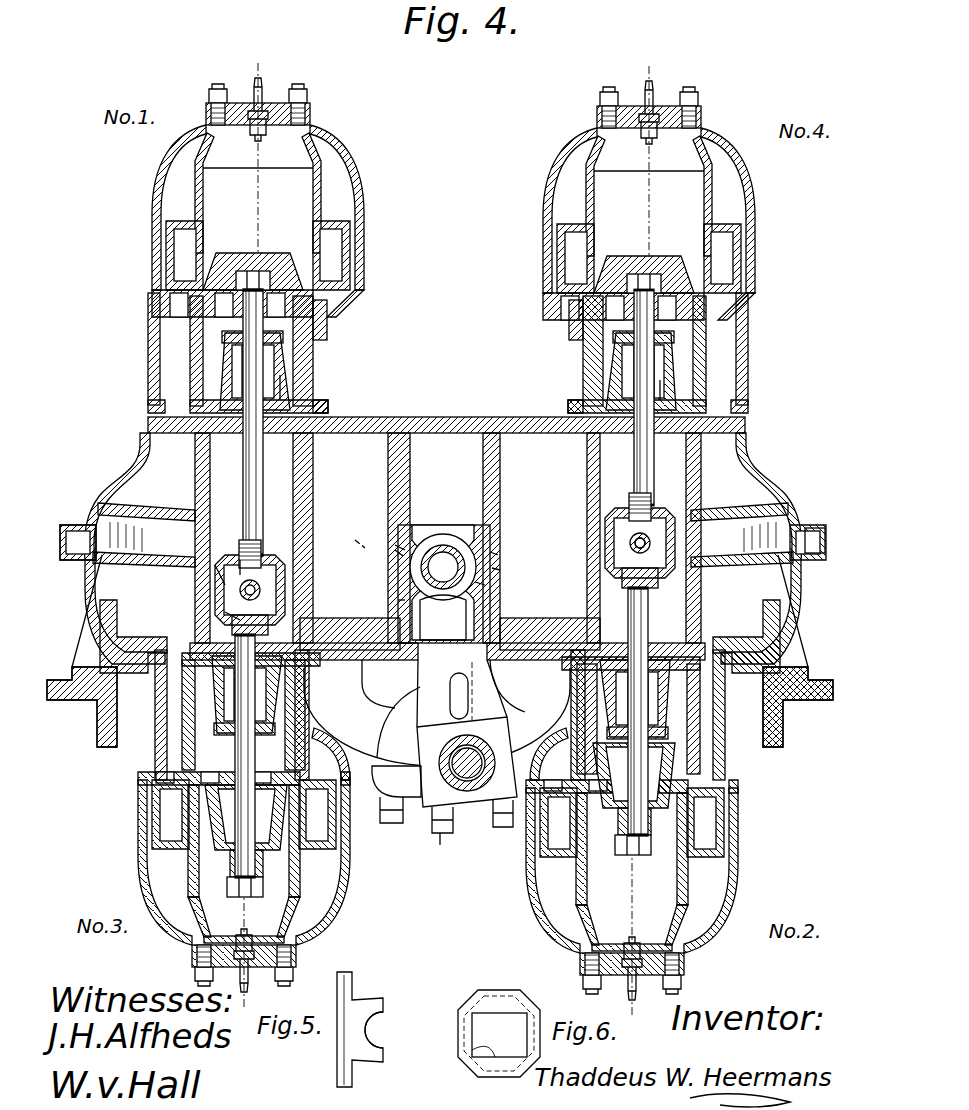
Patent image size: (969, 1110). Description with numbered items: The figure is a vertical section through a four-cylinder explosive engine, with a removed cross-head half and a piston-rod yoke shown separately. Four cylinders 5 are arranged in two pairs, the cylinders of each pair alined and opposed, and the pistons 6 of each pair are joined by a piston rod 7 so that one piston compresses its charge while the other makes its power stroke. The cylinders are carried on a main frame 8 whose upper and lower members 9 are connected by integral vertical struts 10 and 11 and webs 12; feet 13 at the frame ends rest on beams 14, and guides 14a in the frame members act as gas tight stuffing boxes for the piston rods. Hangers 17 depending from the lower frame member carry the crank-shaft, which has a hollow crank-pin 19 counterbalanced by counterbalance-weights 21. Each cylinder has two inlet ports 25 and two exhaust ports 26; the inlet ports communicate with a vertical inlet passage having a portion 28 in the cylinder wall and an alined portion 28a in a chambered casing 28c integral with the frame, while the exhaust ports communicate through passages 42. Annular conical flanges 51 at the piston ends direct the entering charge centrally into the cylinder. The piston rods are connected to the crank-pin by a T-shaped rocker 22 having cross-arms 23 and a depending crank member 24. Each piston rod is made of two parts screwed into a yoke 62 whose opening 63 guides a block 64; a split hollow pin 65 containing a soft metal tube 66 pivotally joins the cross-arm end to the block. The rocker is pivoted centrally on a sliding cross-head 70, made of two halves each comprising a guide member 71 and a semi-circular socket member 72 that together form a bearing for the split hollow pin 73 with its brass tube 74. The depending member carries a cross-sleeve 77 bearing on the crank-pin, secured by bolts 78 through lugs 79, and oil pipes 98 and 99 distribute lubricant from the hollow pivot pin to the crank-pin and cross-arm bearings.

In FIG. 4, the cylinder 5 is at (150, 186).
In FIG. 4, the piston 6 is at (288, 360).
In FIG. 4, the piston rod 7 is at (250, 63).
In FIG. 4, the main frame 8 is at (395, 417).
In FIG. 4, the upper and lower members of the main frame 9 is at (510, 420).
In FIG. 4, the vertical strut 10 is at (580, 487).
In FIG. 4, the vertical strut 11 is at (415, 464).
In FIG. 4, the web 12 is at (424, 541).
In FIG. 4, the foot 13 is at (112, 625).
In FIG. 4, the beam 14 is at (97, 723).
In FIG. 4, the guide 14a is at (282, 376).
In FIG. 4, the hanger 17 is at (437, 717).
In FIG. 4, the crank-pin 19 is at (465, 795).
In FIG. 4, the counterbalance-weight 21 is at (398, 722).
In FIG. 4, the rocker 22 is at (450, 525).
In FIG. 4, the cross-arm 23 is at (355, 540).
In FIG. 4, the depending crank member 24 is at (510, 688).
In FIG. 4, the inlet port 25 is at (175, 351).
In FIG. 4, the exhaust port 26 is at (168, 261).
In FIG. 4, the inlet passage portion 28 is at (190, 379).
In FIG. 4, the inlet passage portion 28a is at (443, 548).
In FIG. 4, the chambered casing 28c is at (822, 540).
In FIG. 4, the exhaust passage 42 is at (350, 245).
In FIG. 4, the annular conical flange 51 is at (255, 256).
In FIG. 4, the yoke 62 is at (268, 565).
In FIG. 6, the yoke 62 is at (458, 1032).
In FIG. 4, the yoke opening 63 is at (630, 580).
In FIG. 6, the yoke opening 63 is at (462, 1055).
In FIG. 4, the block 64 is at (217, 565).
In FIG. 4, the pin 65 is at (240, 560).
In FIG. 4, the soft metal tube 66 is at (225, 612).
In FIG. 4, the cross-head 70 is at (498, 555).
In FIG. 4, the guide member 71 is at (398, 600).
In FIG. 5, the guide member 71 is at (335, 1076).
In FIG. 4, the socket member 72 is at (475, 582).
In FIG. 5, the socket member 72 is at (382, 1030).
In FIG. 4, the hollow pin 73 is at (395, 550).
In FIG. 4, the soft metal tube 74 is at (395, 545).
In FIG. 4, the cross-sleeve 77 is at (510, 760).
In FIG. 4, the bolt 78 is at (440, 834).
In FIG. 4, the lug 79 is at (440, 835).
In FIG. 4, the oil pipe 98 is at (500, 570).
In FIG. 4, the oil pipe 99 is at (445, 628).